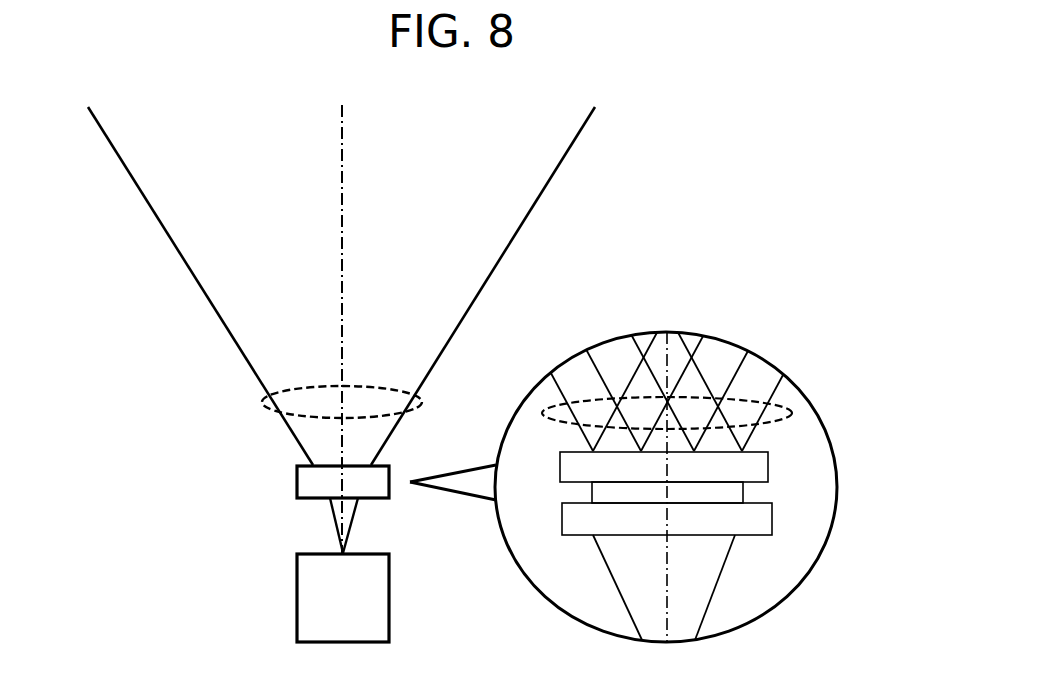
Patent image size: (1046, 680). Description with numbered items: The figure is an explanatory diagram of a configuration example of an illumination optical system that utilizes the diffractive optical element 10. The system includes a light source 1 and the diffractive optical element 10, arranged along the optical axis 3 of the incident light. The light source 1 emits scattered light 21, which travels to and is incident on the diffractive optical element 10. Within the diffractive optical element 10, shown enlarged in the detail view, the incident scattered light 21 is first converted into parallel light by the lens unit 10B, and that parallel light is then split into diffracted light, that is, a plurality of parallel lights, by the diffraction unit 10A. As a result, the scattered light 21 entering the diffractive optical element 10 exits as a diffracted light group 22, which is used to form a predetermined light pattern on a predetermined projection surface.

The light source 1 is at (297, 597).
The optical axis 3 is at (343, 118).
The diffractive optical element 10 is at (297, 481).
The diffraction unit 10A is at (768, 466).
The lens unit 10B is at (772, 519).
The scattered light 21 is at (335, 523).
The diffracted light group 22 is at (263, 400).